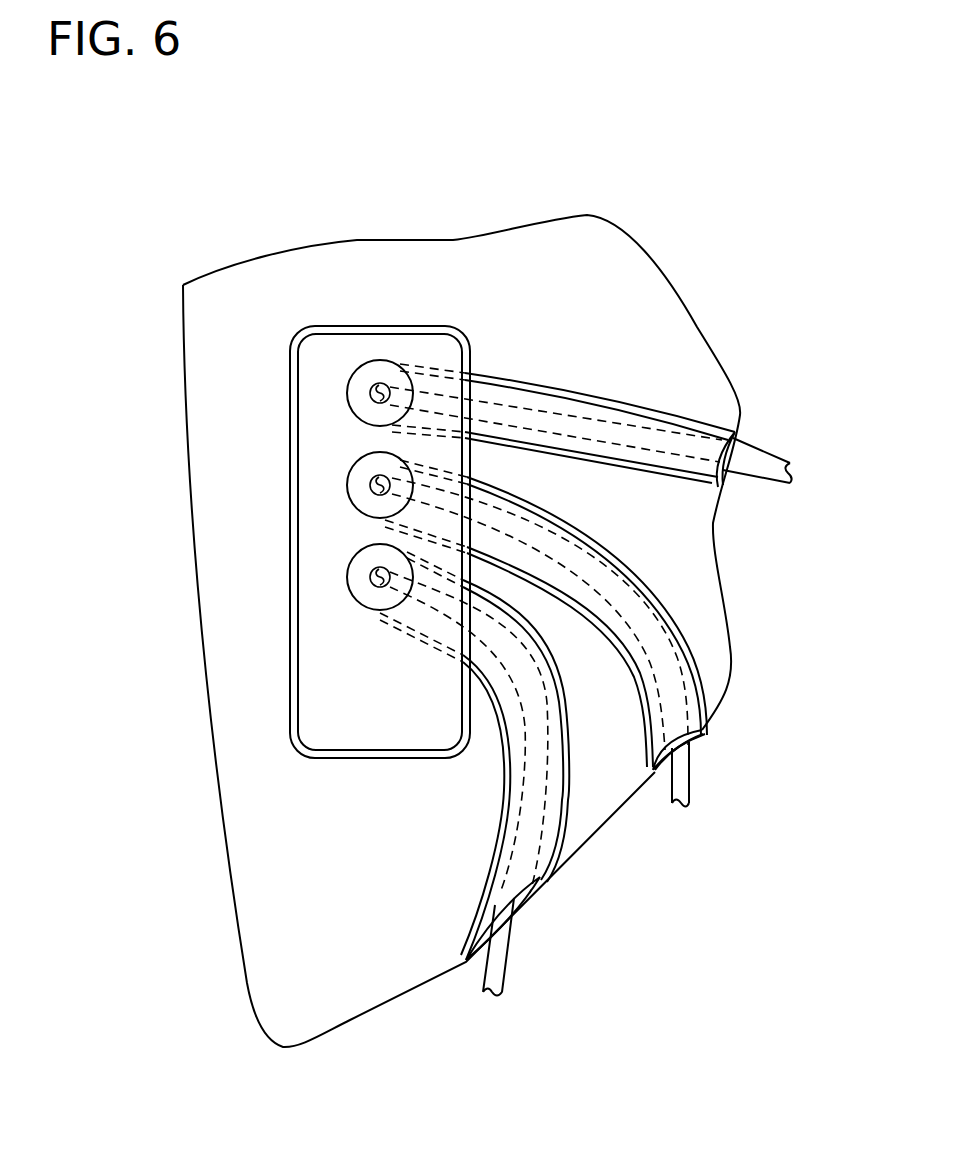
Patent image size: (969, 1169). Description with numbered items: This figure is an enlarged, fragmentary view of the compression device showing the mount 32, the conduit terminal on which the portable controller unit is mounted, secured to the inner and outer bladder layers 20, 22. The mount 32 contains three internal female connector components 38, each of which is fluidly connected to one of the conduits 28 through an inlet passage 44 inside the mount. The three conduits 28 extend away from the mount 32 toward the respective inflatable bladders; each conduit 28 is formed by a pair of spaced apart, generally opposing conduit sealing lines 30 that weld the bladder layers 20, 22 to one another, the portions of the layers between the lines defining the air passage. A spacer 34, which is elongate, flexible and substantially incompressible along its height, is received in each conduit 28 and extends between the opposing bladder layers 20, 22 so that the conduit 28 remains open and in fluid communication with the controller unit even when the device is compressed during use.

The inner bladder layer 20 is at (610, 268).
The outer bladder layer 22 is at (695, 740).
The conduit 28 is at (708, 430).
The conduit sealing line 30 is at (675, 470).
The mount 32 is at (378, 326).
The spacer 34 is at (765, 462).
The female connector component 38 is at (350, 418).
The inlet passage 44 is at (375, 387).